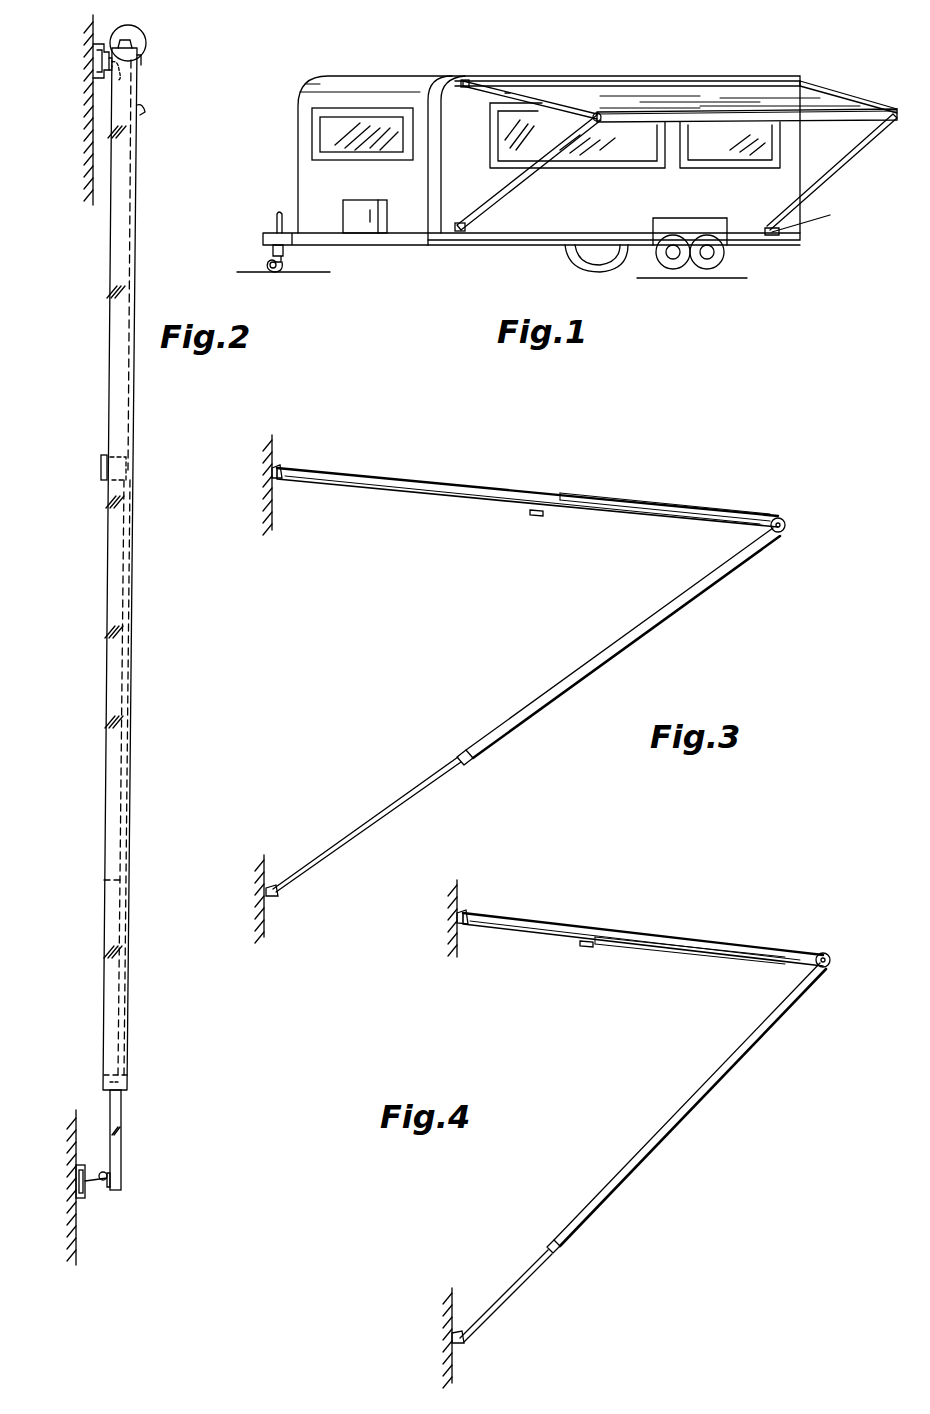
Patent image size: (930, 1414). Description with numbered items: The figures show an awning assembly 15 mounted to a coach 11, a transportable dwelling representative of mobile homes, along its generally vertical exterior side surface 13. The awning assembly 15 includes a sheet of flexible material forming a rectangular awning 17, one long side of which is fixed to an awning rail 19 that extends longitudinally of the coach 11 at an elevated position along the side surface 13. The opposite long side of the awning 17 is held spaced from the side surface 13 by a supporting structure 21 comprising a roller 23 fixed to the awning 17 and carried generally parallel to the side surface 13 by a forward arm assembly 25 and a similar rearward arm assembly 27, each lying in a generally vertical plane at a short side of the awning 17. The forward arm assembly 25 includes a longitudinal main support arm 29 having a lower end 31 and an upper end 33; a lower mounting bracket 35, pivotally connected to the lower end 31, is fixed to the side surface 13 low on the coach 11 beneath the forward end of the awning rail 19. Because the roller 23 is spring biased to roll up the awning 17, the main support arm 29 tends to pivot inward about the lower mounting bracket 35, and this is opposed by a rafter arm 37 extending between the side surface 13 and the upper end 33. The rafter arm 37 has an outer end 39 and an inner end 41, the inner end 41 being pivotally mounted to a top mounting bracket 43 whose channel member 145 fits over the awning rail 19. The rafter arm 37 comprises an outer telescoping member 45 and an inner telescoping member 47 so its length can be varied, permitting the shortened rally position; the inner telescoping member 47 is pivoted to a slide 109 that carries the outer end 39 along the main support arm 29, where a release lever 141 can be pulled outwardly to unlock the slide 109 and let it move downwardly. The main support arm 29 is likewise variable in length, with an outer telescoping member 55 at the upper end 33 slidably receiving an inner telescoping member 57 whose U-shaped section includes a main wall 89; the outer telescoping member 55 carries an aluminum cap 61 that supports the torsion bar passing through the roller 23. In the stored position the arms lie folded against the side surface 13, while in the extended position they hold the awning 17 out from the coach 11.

In FIG. 1, the coach 11 is at (640, 58).
In FIG. 2, the exterior side surface 13 is at (93, 205).
In FIG. 1, the exterior side surface 13 is at (595, 228).
In FIG. 3, the exterior side surface 13 is at (272, 518).
In FIG. 4, the exterior side surface 13 is at (457, 948).
In FIG. 1, the awning assembly 15 is at (775, 215).
In FIG. 1, the awning 17 is at (640, 100).
In FIG. 3, the awning 17 is at (520, 493).
In FIG. 4, the awning 17 is at (635, 935).
In FIG. 2, the awning rail 19 is at (95, 58).
In FIG. 1, the awning rail 19 is at (730, 88).
In FIG. 1, the supporting structure 21 is at (505, 140).
In FIG. 2, the roller 23 is at (146, 60).
In FIG. 1, the roller 23 is at (720, 125).
In FIG. 3, the roller 23 is at (782, 532).
In FIG. 4, the roller 23 is at (826, 968).
In FIG. 1, the forward arm assembly 25 is at (462, 200).
In FIG. 1, the rearward arm assembly 27 is at (840, 180).
In FIG. 3, the main support arm 29 is at (475, 728).
In FIG. 4, the main support arm 29 is at (607, 1173).
In FIG. 1, the lower end 31 is at (452, 229).
In FIG. 1, the upper end 33 is at (610, 125).
In FIG. 2, the lower mounting bracket 35 is at (68, 1205).
In FIG. 1, the lower mounting bracket 35 is at (455, 232).
In FIG. 3, the rafter arm 37 is at (488, 523).
In FIG. 4, the rafter arm 37 is at (545, 965).
In FIG. 1, the outer end 39 is at (590, 138).
In FIG. 1, the inner end 41 is at (462, 98).
In FIG. 1, the top mounting bracket 43 is at (450, 88).
In FIG. 2, the outer telescoping member 45 is at (129, 412).
In FIG. 1, the outer telescoping member 45 is at (565, 95).
In FIG. 2, the inner telescoping member 47 is at (118, 617).
In FIG. 1, the inner telescoping member 47 is at (508, 95).
In FIG. 2, the outer telescoping member 55 is at (118, 244).
In FIG. 1, the outer telescoping member 55 is at (535, 192).
In FIG. 2, the inner telescoping member 57 is at (118, 1125).
In FIG. 1, the inner telescoping member 57 is at (480, 232).
In FIG. 2, the cap 61 is at (142, 38).
In FIG. 2, the main wall 89 is at (126, 598).
In FIG. 2, the slide 109 is at (104, 1083).
In FIG. 2, the release lever 141 is at (145, 113).
In FIG. 2, the channel member 145 is at (95, 42).